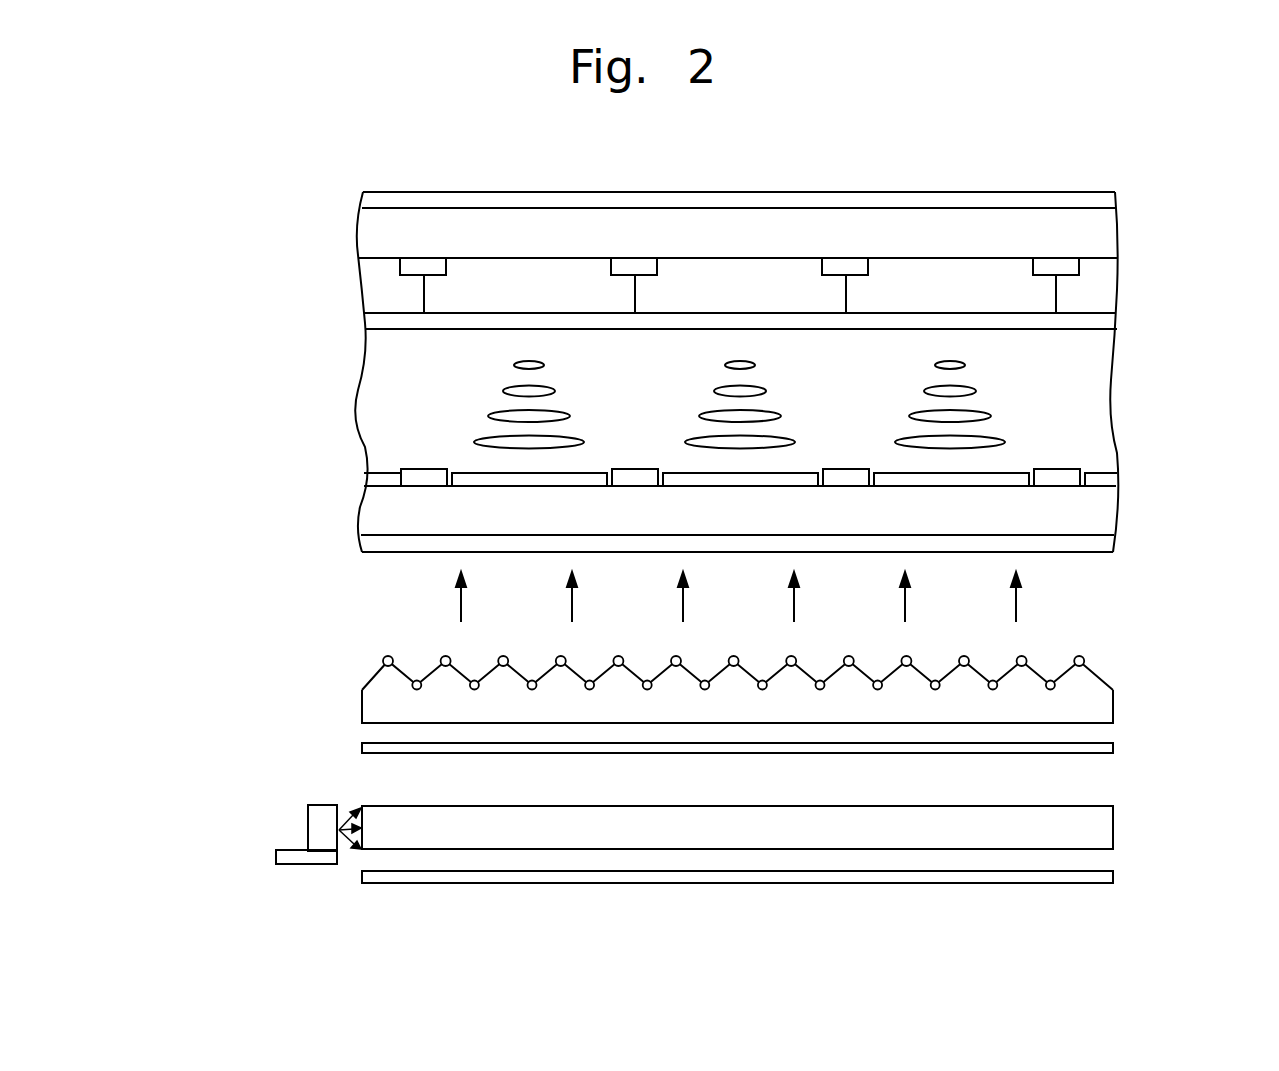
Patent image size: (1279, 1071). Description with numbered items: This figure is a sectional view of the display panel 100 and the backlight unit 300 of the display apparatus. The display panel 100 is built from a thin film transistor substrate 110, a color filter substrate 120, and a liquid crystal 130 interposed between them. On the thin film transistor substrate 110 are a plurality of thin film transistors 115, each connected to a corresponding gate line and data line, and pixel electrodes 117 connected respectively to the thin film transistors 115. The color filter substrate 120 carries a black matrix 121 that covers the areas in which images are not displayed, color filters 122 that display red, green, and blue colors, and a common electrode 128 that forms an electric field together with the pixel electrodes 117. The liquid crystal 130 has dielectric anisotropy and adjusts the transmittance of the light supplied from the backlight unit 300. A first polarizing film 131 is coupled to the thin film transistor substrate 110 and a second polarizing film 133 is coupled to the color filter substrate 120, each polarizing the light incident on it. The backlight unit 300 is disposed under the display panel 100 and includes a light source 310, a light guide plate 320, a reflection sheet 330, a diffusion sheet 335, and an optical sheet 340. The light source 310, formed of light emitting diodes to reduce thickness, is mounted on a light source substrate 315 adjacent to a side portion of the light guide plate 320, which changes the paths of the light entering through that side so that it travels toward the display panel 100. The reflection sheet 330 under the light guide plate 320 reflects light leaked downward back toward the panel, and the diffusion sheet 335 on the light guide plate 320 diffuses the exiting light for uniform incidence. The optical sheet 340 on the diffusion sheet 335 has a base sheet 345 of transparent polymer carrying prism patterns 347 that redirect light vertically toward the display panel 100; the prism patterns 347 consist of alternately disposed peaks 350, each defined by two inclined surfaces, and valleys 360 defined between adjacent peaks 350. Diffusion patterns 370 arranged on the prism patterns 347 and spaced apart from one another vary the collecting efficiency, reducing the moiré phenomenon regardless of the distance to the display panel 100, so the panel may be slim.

The display panel 100 is at (1188, 227).
The thin film transistor substrate 110 is at (1100, 511).
The thin film transistor 115 is at (423, 472).
The pixel electrode 117 is at (372, 480).
The color filter substrate 120 is at (1100, 233).
The black matrix 121 is at (423, 267).
The color filter 122 is at (513, 263).
The common electrode 128 is at (372, 322).
The liquid crystal 130 is at (985, 416).
The first polarizing film 131 is at (1100, 546).
The second polarizing film 133 is at (1100, 202).
The backlight unit 300 is at (178, 590).
The light source 310 is at (315, 829).
The light source substrate 315 is at (283, 857).
The light guide plate 320 is at (387, 808).
The reflection sheet 330 is at (368, 875).
The diffusion sheet 335 is at (372, 750).
The optical sheet 340 is at (232, 590).
The base sheet 345 is at (375, 706).
The prism pattern 347 is at (290, 628).
The peak 350 is at (378, 674).
The valley 360 is at (420, 663).
The diffusion pattern 370 is at (443, 656).